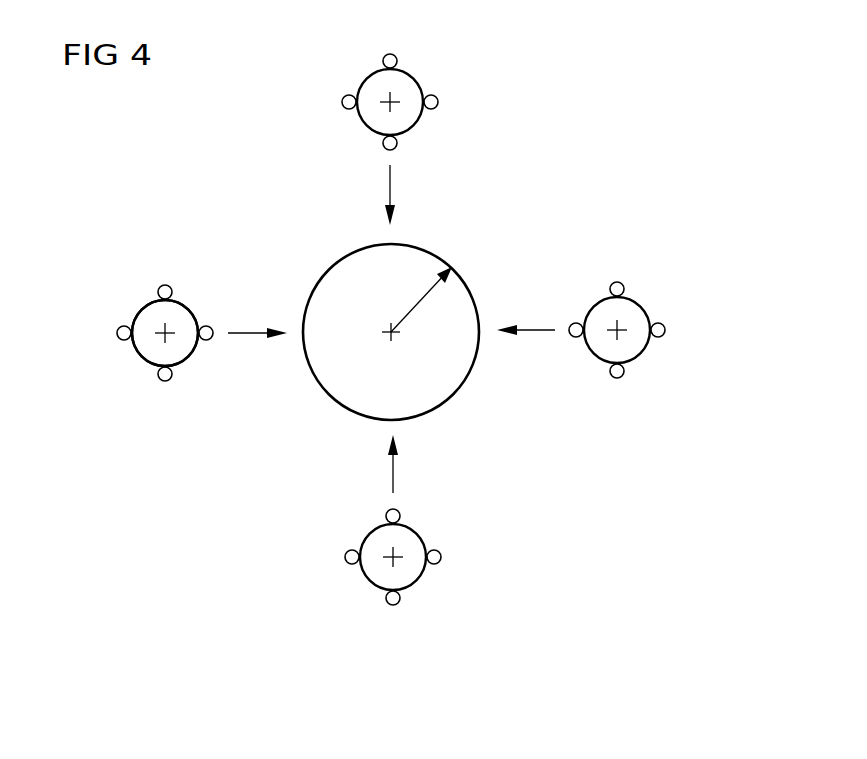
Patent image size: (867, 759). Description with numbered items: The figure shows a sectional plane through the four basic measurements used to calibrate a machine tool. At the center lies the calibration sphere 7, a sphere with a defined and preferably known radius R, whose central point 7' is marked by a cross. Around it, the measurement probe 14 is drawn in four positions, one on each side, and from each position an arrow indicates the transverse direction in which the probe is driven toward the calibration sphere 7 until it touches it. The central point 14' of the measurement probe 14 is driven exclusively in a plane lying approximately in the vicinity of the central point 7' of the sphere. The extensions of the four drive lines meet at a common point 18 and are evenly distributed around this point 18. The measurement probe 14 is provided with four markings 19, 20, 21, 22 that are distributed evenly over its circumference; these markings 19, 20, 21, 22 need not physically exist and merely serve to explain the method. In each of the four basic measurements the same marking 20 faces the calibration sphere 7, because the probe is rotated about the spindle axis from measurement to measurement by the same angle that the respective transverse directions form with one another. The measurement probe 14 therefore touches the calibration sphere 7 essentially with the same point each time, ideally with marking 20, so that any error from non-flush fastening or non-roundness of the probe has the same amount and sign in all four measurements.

The calibration sphere 7 is at (398, 339).
The central point of the calibration sphere 7' is at (367, 310).
The common point 18 is at (367, 310).
The measurement probe 14 is at (399, 309).
The central point of the measurement probe 14' is at (151, 357).
The marking 19 is at (437, 103).
The marking 20 is at (377, 145).
The marking 21 is at (378, 58).
The marking 22 is at (343, 103).